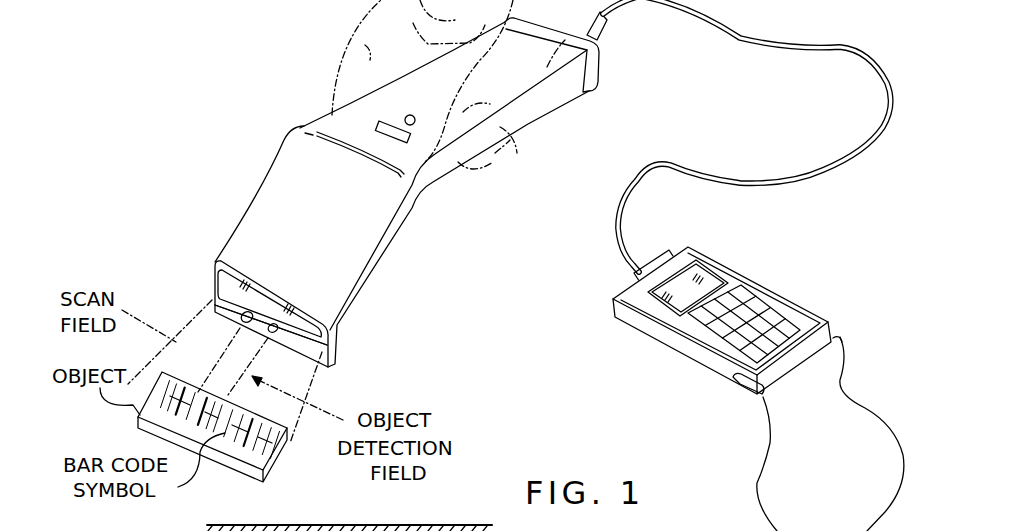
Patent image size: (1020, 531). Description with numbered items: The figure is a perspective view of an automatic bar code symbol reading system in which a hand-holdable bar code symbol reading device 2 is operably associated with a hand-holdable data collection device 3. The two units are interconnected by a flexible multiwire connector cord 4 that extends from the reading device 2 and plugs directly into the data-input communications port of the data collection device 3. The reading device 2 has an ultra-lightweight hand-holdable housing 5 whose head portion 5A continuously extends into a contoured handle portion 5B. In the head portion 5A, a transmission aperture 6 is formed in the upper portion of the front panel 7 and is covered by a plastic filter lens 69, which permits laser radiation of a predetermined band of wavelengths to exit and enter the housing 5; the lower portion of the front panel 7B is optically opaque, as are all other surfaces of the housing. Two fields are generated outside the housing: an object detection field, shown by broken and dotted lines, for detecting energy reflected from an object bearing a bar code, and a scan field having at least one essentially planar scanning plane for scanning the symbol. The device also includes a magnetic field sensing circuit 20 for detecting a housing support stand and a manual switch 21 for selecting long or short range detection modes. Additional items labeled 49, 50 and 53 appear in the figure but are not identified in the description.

The bar code symbol reading device 2 is at (376, 183).
The data collection device 3 is at (786, 261).
The flexible multiwire connector cord 4 is at (843, 56).
The housing 5 is at (413, 192).
The head portion 5A is at (270, 180).
The handle portion 5B is at (584, 50).
The transmission aperture 6 is at (225, 278).
The front panel 7 is at (241, 313).
The lower portion of front panel 7B is at (328, 362).
The magnetic field sensing circuit 20 is at (378, 124).
The manual switch 21 is at (409, 115).
The scanned surface 49 is at (433, 525).
The object 50 is at (493, 527).
The bottom wall 53 is at (243, 526).
The plastic filter lens 69 is at (317, 328).